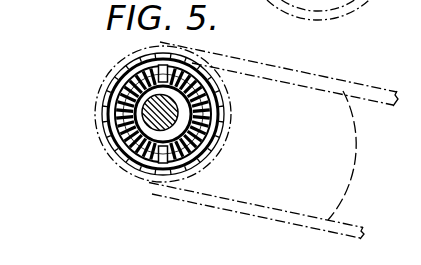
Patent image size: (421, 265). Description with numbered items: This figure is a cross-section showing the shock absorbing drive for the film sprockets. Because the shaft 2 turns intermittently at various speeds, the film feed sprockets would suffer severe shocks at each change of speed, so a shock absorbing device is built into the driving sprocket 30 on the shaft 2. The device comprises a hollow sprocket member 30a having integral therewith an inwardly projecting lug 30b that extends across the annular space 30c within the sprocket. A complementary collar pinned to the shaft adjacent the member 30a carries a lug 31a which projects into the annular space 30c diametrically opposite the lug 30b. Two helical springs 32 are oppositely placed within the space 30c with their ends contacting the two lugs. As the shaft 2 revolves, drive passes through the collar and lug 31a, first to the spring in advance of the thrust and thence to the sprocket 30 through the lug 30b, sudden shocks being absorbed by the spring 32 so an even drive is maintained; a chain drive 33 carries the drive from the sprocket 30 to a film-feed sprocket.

The shaft 2 is at (169, 119).
The driving sprocket 30 is at (97, 77).
The hollow sprocket member 30a is at (106, 100).
The inwardly projecting lug 30b is at (123, 64).
The annular space 30c is at (105, 129).
The lug 31a is at (163, 159).
The helical springs 32 is at (122, 156).
The chain drive 33 is at (346, 155).